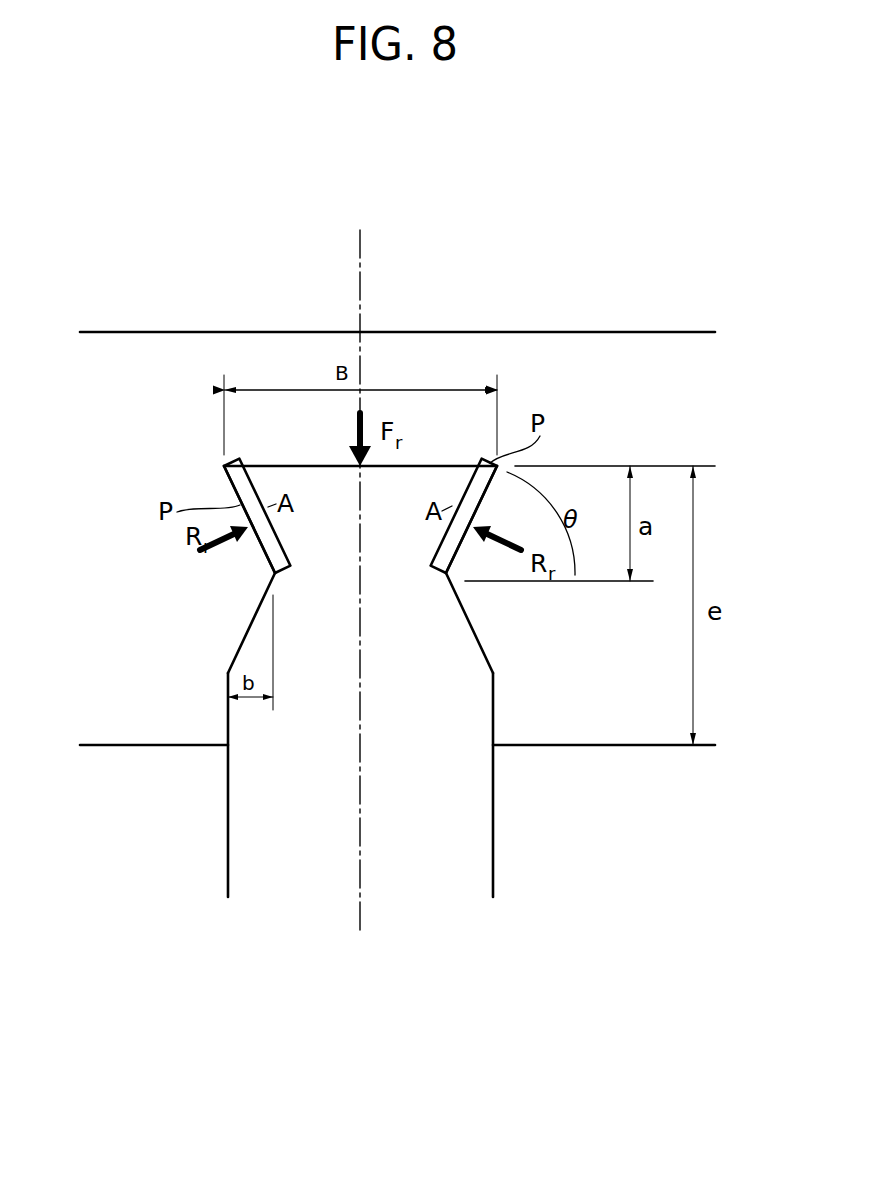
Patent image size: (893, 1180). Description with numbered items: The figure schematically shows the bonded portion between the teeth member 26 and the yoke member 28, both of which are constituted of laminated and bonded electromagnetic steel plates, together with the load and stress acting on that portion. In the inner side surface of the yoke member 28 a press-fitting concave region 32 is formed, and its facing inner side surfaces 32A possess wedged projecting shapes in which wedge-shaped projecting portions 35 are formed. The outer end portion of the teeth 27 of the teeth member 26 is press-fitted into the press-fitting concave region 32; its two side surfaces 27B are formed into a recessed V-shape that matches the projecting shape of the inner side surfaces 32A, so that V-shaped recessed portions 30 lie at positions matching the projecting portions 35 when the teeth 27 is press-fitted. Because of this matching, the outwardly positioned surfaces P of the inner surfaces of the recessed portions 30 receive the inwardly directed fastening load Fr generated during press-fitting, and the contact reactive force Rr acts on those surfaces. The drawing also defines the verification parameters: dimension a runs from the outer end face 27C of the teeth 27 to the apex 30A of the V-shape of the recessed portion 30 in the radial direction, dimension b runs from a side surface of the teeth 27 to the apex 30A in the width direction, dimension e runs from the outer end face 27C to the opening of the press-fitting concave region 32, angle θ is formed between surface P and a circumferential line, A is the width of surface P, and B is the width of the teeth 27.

The yoke member 28 is at (502, 330).
The outer end face of the teeth 27C is at (333, 468).
The press-fitting concave region 32 is at (268, 465).
The inner side surface of the press-fitting concave region 32A is at (233, 490).
The V-shaped recessed portion 30 is at (272, 590).
The apex of the V-shape of the recessed portion 30A is at (277, 574).
The projecting portion 35 is at (238, 583).
The side surface of the outer end portion of the teeth 27B is at (228, 737).
The teeth 27 is at (228, 866).
The teeth member 26 is at (497, 823).